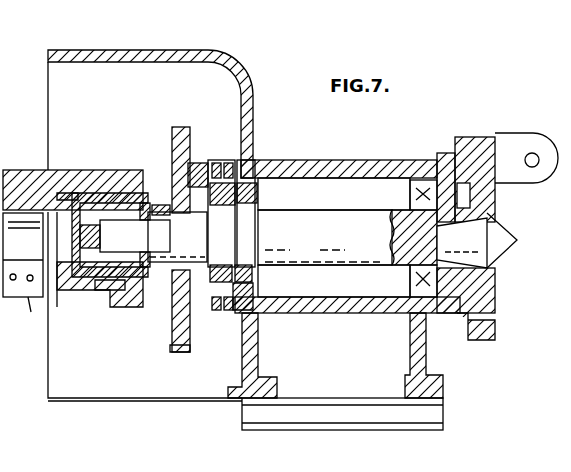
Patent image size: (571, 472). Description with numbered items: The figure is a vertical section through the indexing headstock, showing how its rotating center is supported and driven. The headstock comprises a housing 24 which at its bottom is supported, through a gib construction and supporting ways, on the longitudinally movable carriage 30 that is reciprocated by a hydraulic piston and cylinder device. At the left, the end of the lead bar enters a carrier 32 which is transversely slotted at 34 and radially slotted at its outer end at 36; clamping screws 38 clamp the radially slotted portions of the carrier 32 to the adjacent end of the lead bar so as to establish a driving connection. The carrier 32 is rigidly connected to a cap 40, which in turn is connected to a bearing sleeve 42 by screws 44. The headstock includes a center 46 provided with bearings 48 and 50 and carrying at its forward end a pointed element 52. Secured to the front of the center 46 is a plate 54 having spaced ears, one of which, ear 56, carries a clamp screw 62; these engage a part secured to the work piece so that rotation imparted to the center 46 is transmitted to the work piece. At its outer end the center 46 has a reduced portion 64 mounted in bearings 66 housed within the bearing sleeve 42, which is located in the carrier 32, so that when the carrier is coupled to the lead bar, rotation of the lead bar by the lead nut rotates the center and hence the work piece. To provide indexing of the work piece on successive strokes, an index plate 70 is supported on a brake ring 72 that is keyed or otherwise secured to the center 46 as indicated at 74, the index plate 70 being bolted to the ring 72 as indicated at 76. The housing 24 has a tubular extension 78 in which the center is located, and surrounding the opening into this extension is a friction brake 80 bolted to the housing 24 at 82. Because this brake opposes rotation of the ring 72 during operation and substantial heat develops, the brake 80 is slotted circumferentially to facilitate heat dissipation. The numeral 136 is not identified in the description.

The housing 24 is at (198, 50).
The longitudinally movable carriage 30 is at (5, 389).
The carrier 32 is at (82, 168).
The transverse slot 34 is at (52, 297).
The radial slot 36 is at (20, 181).
The clamping screws 38 is at (14, 274).
The cap 40 is at (78, 170).
The bearing sleeve 42 is at (123, 183).
The screws 44 is at (105, 285).
The center 46 is at (326, 237).
The bearing 48 is at (258, 192).
The bearing 50 is at (423, 197).
The pointed element 52 is at (490, 240).
The plate 54 is at (470, 322).
The ear 56 is at (513, 147).
The clamp screw 62 is at (534, 158).
The reduced portion 64 is at (125, 236).
The bearings 66 is at (147, 190).
The index plate 70 is at (172, 327).
The brake ring 72 is at (197, 163).
The key 74 is at (177, 237).
The bolts 76 is at (161, 197).
The tubular extension 78 is at (332, 162).
The friction brake 80 is at (225, 175).
The bolts 82 is at (254, 162).
The fastener 136 is at (0, 157).